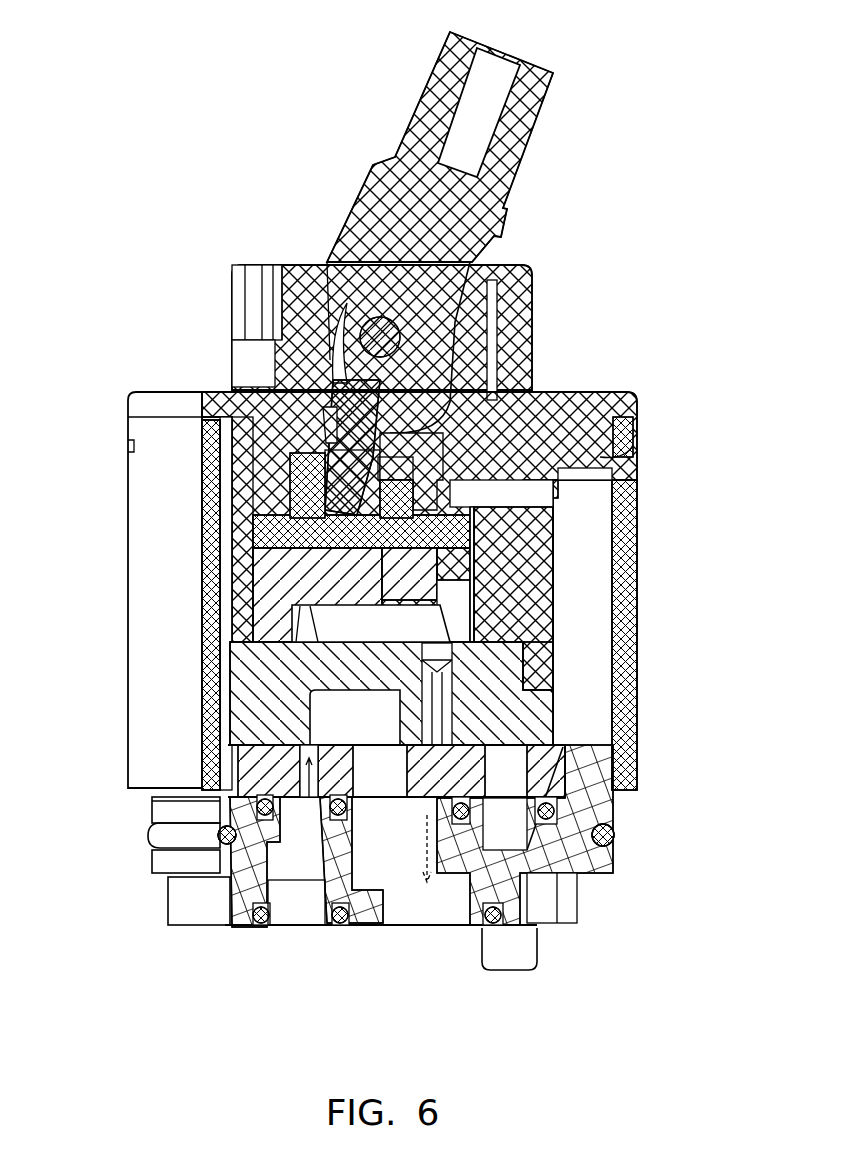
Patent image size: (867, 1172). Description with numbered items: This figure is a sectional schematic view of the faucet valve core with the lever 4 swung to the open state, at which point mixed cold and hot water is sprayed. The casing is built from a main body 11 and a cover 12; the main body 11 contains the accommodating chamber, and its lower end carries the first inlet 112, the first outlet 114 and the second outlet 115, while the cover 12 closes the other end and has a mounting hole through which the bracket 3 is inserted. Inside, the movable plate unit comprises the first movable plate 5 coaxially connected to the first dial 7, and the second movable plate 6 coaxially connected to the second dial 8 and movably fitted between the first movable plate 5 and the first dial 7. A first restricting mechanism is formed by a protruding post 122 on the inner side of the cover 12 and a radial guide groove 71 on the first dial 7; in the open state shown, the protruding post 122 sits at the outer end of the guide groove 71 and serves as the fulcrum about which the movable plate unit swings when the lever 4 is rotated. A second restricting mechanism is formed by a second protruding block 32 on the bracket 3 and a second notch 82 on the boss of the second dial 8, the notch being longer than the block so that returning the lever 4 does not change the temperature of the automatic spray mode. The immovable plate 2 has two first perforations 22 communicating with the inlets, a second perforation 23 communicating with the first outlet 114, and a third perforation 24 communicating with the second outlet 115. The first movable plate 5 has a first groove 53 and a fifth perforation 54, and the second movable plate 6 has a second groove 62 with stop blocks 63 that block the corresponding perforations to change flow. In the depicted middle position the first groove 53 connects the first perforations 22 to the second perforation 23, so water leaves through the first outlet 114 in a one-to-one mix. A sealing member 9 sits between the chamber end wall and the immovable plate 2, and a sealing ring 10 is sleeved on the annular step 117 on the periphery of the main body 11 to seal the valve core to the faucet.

The lever 4 is at (533, 85).
The cover 12 is at (530, 277).
The bracket 3 is at (492, 317).
The second protruding block 32 is at (625, 432).
The protruding post 122 is at (600, 476).
The guide groove 71 is at (520, 495).
The first dial 7 is at (545, 565).
The main body 11 is at (628, 600).
The fifth perforation 54 is at (530, 650).
The first movable plate 5 is at (455, 700).
The third perforation 24 is at (565, 760).
The immovable plate 2 is at (590, 792).
The second outlet 115 is at (614, 835).
The sealing ring 10 is at (585, 850).
The second notch 82 is at (210, 490).
The second dial 8 is at (240, 520).
The second movable plate 6 is at (260, 560).
The stop blocks 63 is at (300, 600).
The second groove 62 is at (260, 650).
The first groove 53 is at (330, 715).
The second perforation 23 is at (300, 765).
The first perforations 22 is at (202, 780).
The annular step 117 is at (200, 832).
The first inlet 112 is at (230, 905).
The first outlet 114 is at (365, 925).
The sealing member 9 is at (440, 900).